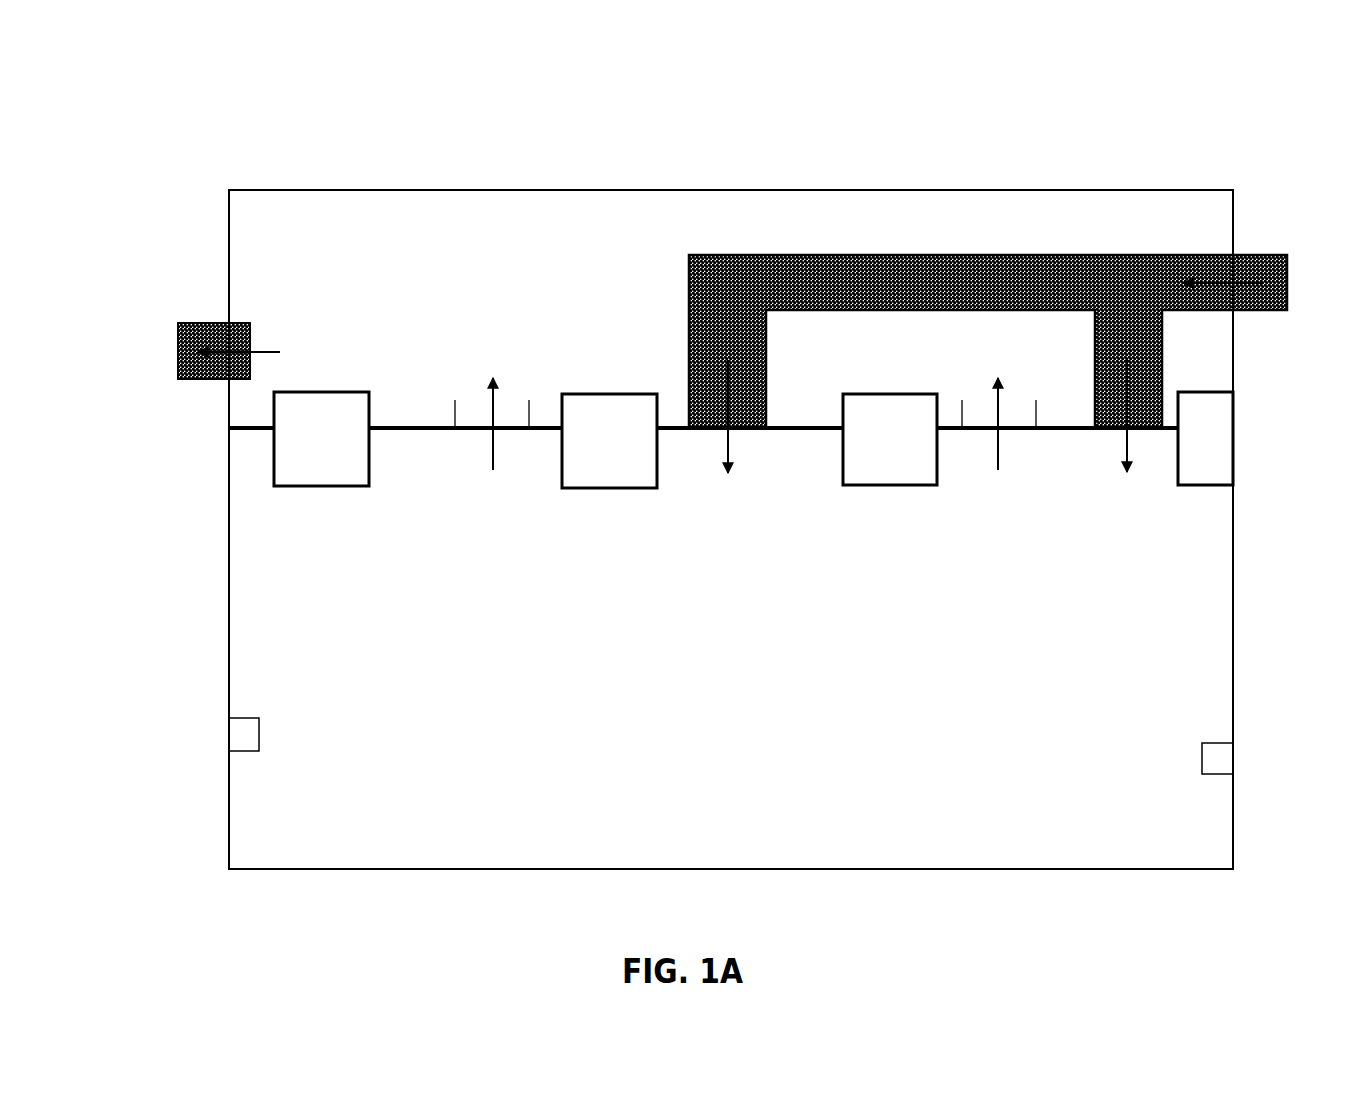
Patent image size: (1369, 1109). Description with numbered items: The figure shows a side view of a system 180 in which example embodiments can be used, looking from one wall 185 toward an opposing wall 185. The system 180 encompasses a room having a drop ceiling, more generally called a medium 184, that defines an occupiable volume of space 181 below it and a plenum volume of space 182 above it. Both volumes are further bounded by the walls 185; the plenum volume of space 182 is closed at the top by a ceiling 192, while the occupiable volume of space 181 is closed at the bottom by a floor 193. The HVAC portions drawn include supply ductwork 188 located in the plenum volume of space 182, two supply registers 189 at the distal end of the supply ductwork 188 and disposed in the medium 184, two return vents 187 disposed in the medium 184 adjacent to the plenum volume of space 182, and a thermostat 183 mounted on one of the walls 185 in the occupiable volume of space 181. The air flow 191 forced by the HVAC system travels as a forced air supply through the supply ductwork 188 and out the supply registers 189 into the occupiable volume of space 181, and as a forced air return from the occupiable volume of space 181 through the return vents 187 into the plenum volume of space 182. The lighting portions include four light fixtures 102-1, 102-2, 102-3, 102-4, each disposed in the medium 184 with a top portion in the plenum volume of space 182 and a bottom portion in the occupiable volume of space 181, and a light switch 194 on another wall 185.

The system 180 is at (1205, 123).
The occupiable volume of space 181 is at (403, 829).
The plenum volume of space 182 is at (383, 230).
The thermostat 183 is at (236, 718).
The medium 184 is at (405, 437).
The wall 185 is at (229, 595).
The return vent 187 is at (978, 443).
The supply ductwork 188 is at (1007, 248).
The supply register 189 is at (748, 442).
The air flow 191 is at (230, 352).
The ceiling 192 is at (493, 190).
The floor 193 is at (962, 869).
The light switch 194 is at (1220, 742).
The light fixture 102-1 is at (321, 439).
The light fixture 102-2 is at (609, 441).
The light fixture 102-3 is at (890, 439).
The light fixture 102-4 is at (1205, 438).